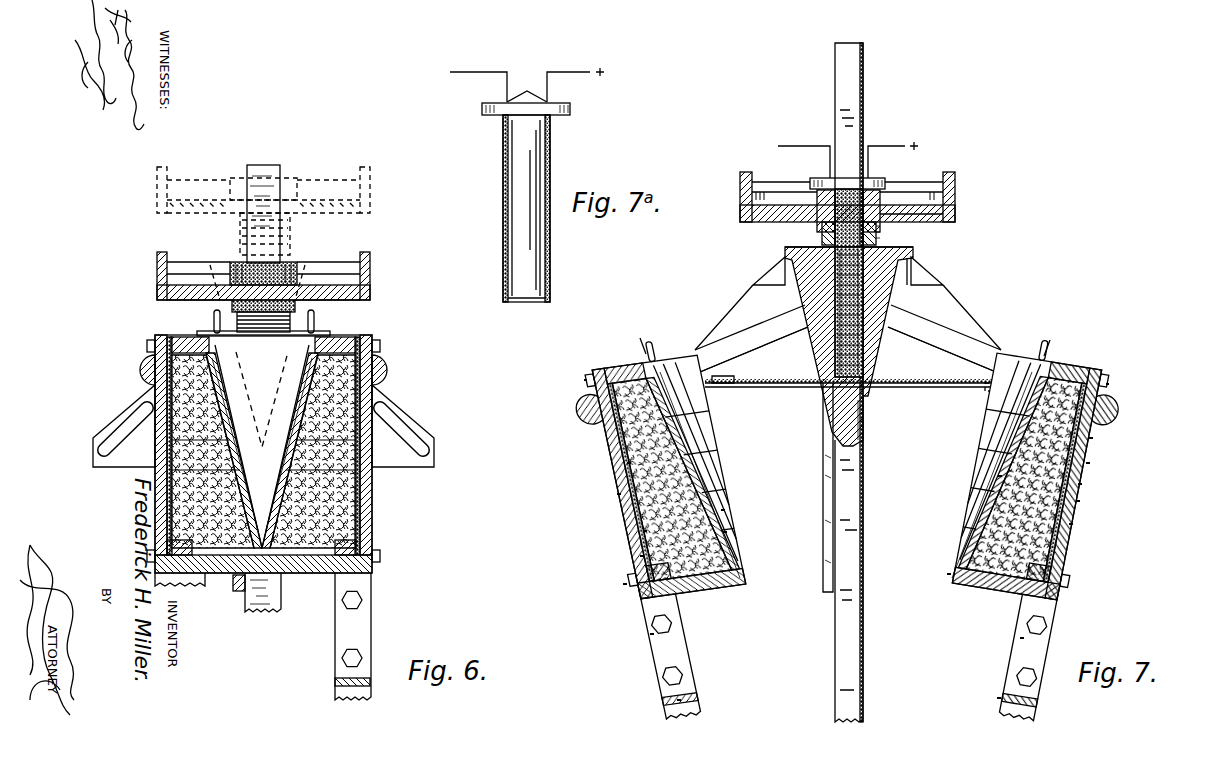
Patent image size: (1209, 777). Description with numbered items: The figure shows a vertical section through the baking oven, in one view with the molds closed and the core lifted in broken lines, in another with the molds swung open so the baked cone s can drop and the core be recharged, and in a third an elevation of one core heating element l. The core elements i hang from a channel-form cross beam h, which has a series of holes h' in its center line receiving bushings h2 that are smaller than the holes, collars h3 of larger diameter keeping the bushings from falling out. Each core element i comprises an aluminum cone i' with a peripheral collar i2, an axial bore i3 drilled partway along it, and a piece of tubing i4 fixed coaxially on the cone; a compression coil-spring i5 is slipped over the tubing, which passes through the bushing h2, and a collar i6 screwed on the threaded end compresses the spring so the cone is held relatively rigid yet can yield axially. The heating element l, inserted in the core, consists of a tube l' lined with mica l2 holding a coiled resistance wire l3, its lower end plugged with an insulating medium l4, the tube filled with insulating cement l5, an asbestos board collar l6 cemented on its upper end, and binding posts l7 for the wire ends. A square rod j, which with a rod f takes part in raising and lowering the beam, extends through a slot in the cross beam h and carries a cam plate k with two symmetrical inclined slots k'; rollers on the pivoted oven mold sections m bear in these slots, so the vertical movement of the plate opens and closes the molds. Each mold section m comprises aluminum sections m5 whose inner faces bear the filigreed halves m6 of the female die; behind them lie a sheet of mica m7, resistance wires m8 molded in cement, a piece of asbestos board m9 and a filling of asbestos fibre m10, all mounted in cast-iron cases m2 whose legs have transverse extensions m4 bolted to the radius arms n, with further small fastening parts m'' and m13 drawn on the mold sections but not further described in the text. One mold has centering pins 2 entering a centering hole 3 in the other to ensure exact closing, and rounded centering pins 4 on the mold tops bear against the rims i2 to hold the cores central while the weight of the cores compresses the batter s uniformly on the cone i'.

In FIG. 6, the third rod j is at (263, 165).
In FIG. 7, the third rod j is at (863, 110).
In FIG. 6, the cross beam h is at (229, 233).
In FIG. 7, the cross beam h is at (868, 197).
In FIG. 6, the holes h' is at (282, 300).
In FIG. 7, the bushings h2 is at (890, 222).
In FIG. 6, the collars h3 is at (295, 205).
In FIG. 7, the collars h3 is at (817, 208).
In FIG. 7, the core elements i is at (837, 346).
In FIG. 6, the aluminum cone i' is at (203, 360).
In FIG. 7, the aluminum cone i' is at (958, 274).
In FIG. 6, the peripheral collar i2 is at (215, 248).
In FIG. 7, the peripheral collar i2 is at (913, 254).
In FIG. 7, the axial bore i3 is at (880, 354).
In FIG. 7, the tubing i4 is at (740, 215).
In FIG. 6, the compression coil-spring i5 is at (300, 237).
In FIG. 7, the compression coil-spring i5 is at (876, 232).
In FIG. 6, the collar i6 is at (300, 277).
In FIG. 7, the collar i6 is at (885, 197).
In FIG. 6, the cam plate k is at (245, 426).
In FIG. 7, the cam plate k is at (858, 314).
In FIG. 6, the inclined slots k' is at (271, 424).
In FIG. 7, the inclined slots k' is at (848, 332).
In FIG. 7A, the electric heating element l is at (533, 208).
In FIG. 7A, the tubing l' is at (505, 208).
In FIG. 7, the tubing l' is at (821, 312).
In FIG. 7, the mica lining l2 is at (865, 337).
In FIG. 7A, the coiled resistance wire l3 is at (480, 74).
In FIG. 7, the coiled resistance wire l3 is at (801, 148).
In FIG. 7, the insulating medium l4 is at (867, 384).
In FIG. 7, the insulating cement l5 is at (823, 237).
In FIG. 6, the asbestos board collar l6 is at (288, 182).
In FIG. 7A, the asbestos board collar l6 is at (572, 108).
In FIG. 7, the asbestos board collar l6 is at (872, 181).
In FIG. 7A, the binding posts l7 is at (519, 98).
In FIG. 6, the oven mold sections m is at (280, 460).
In FIG. 7, the oven mold sections m is at (846, 528).
In FIG. 6, the mold nut m'' is at (268, 444).
In FIG. 7, the mold nut m'' is at (844, 497).
In FIG. 6, the cast-iron cases m2 is at (373, 503).
In FIG. 7, the cast-iron cases m2 is at (623, 584).
In FIG. 6, the transverse extension m4 is at (240, 586).
In FIG. 7, the transverse extension m4 is at (650, 634).
In FIG. 6, the aluminum sections m5 is at (360, 354).
In FIG. 7, the aluminum sections m5 is at (725, 510).
In FIG. 7, the filigreed halves of female die members m6 is at (673, 378).
In FIG. 6, the sheet of mica m7 is at (158, 475).
In FIG. 7, the sheet of mica m7 is at (627, 463).
In FIG. 6, the resistance wires m8 is at (375, 453).
In FIG. 7, the resistance wires m8 is at (630, 502).
In FIG. 6, the asbestos board m9 is at (165, 498).
In FIG. 7, the asbestos board m9 is at (640, 556).
In FIG. 6, the asbestos fibre m10 is at (152, 370).
In FIG. 7, the asbestos fibre m10 is at (643, 531).
In FIG. 7, the mold hinge m13 is at (727, 532).
In FIG. 6, the radius arms n is at (335, 685).
In FIG. 7, the radius arms n is at (677, 700).
In FIG. 6, the rod f is at (235, 598).
In FIG. 7, the rod f is at (830, 537).
In FIG. 6, the baked cone s is at (262, 446).
In FIG. 7, the centering pins 2 is at (725, 386).
In FIG. 7, the centering hole 3 is at (987, 398).
In FIG. 6, the centering pins 4 is at (214, 320).
In FIG. 7, the centering pins 4 is at (640, 337).